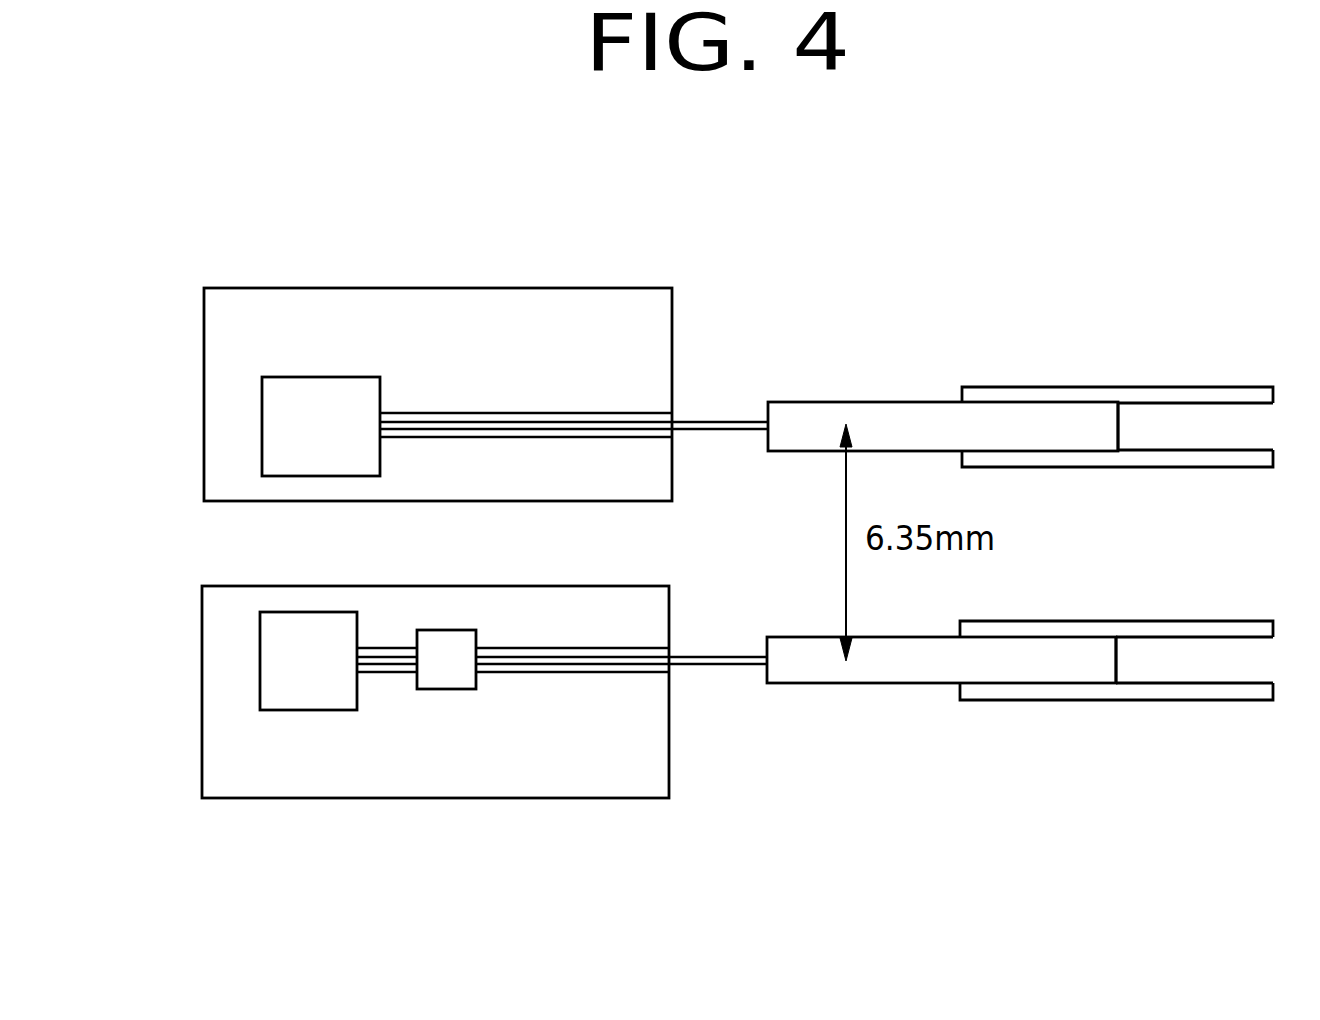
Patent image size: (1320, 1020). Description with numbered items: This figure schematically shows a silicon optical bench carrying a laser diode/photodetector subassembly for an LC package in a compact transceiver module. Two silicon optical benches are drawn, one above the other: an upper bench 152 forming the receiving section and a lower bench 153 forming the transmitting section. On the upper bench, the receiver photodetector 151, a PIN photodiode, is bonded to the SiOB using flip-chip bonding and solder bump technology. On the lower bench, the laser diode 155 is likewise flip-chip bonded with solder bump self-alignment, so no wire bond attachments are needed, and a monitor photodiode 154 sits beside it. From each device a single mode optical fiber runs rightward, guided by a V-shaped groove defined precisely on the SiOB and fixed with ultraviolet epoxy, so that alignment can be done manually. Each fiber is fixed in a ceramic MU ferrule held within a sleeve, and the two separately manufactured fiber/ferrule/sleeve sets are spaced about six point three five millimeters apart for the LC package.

The receiver photodetector 151 is at (359, 382).
The first silicon optical bench (SiOB) 152 is at (271, 303).
The second silicon optical bench (SiOB) 153 is at (516, 785).
The monitor photodiode (MPD) 154 is at (278, 697).
The laser diode 155 is at (437, 687).